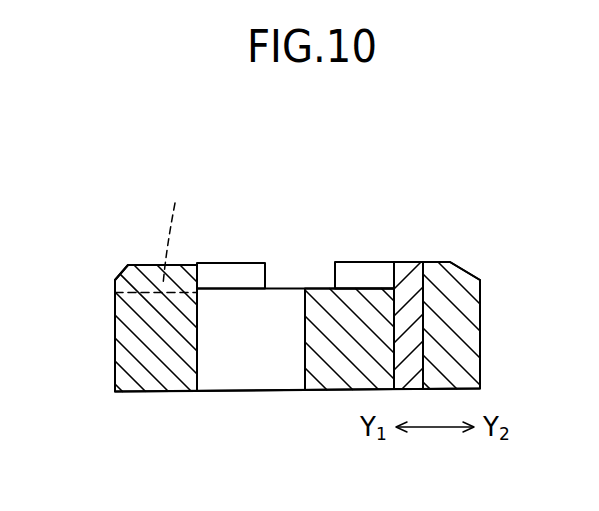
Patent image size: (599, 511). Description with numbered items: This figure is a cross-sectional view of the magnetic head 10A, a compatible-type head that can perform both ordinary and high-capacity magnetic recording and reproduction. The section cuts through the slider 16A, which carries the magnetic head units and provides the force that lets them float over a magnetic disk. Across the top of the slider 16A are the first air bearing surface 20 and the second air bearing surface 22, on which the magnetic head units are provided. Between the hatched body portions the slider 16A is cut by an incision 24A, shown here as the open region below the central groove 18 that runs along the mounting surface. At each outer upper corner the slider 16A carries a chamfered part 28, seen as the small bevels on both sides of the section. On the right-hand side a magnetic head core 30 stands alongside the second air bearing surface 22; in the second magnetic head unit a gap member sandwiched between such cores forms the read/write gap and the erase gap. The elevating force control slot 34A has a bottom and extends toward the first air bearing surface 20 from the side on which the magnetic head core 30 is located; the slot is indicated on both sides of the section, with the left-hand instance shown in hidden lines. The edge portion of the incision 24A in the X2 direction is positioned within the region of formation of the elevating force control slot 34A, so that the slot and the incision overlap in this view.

The magnetic head 10A is at (392, 137).
The slider 16A is at (300, 389).
The central groove 18 is at (292, 287).
The first air bearing surface 20 is at (247, 263).
The second air bearing surface 22 is at (432, 262).
The incision 24A is at (223, 368).
The chamfered part 28 is at (128, 267).
The magnetic head core 30 is at (405, 262).
The elevating force control slot 34A is at (223, 273).